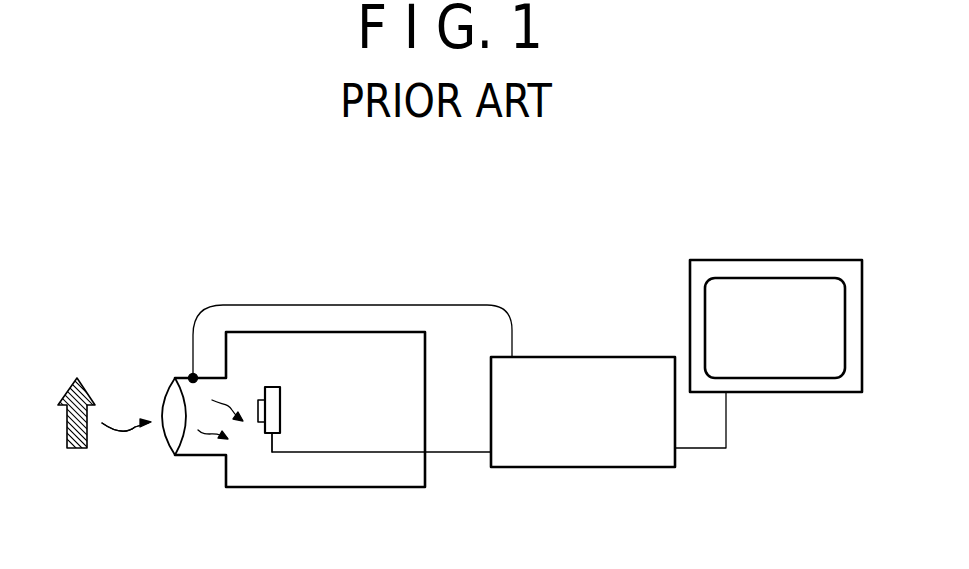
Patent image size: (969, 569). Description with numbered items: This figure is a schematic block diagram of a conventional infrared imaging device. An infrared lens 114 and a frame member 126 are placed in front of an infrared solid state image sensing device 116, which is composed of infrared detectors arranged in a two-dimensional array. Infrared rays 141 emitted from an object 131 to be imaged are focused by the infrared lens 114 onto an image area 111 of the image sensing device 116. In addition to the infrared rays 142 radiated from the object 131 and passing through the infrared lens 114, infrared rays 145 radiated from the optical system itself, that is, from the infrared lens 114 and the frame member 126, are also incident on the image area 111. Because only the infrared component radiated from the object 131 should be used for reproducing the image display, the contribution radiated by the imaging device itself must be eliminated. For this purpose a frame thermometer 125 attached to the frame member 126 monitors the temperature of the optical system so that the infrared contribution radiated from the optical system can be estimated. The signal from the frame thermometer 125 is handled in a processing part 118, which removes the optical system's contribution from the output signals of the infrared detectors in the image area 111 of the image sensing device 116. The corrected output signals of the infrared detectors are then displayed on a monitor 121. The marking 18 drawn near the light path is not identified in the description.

The image area 111 is at (280, 410).
The infrared lens 114 is at (164, 392).
The infrared solid state image sensing device 116 is at (278, 386).
The processing part 118 is at (575, 357).
The monitor 121 is at (786, 260).
The frame thermometer 125 is at (193, 373).
The frame member 126 is at (207, 458).
The object 131 is at (75, 377).
The infrared rays 141 is at (123, 391).
The infrared rays 142 is at (222, 440).
The infrared rays 145 is at (236, 405).
The light 18 is at (125, 409).